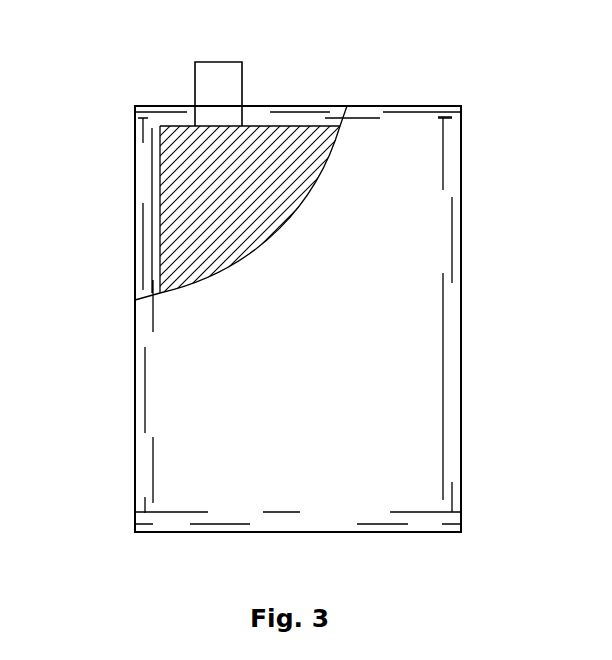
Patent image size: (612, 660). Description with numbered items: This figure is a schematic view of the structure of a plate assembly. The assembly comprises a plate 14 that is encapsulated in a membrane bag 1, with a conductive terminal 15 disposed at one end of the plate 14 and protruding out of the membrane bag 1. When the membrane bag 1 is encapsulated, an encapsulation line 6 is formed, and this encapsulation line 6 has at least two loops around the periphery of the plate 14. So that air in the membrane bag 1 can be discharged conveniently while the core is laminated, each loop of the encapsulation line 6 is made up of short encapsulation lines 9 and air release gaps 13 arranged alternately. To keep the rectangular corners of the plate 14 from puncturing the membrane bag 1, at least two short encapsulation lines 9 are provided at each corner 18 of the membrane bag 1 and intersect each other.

The membrane bag 1 is at (465, 400).
The encapsulation line 6 is at (453, 310).
The short encapsulation line 9 is at (450, 217).
The air release gap 13 is at (442, 190).
The plate 14 is at (192, 208).
The conductive terminal 15 is at (210, 80).
The corner 18 is at (462, 92).